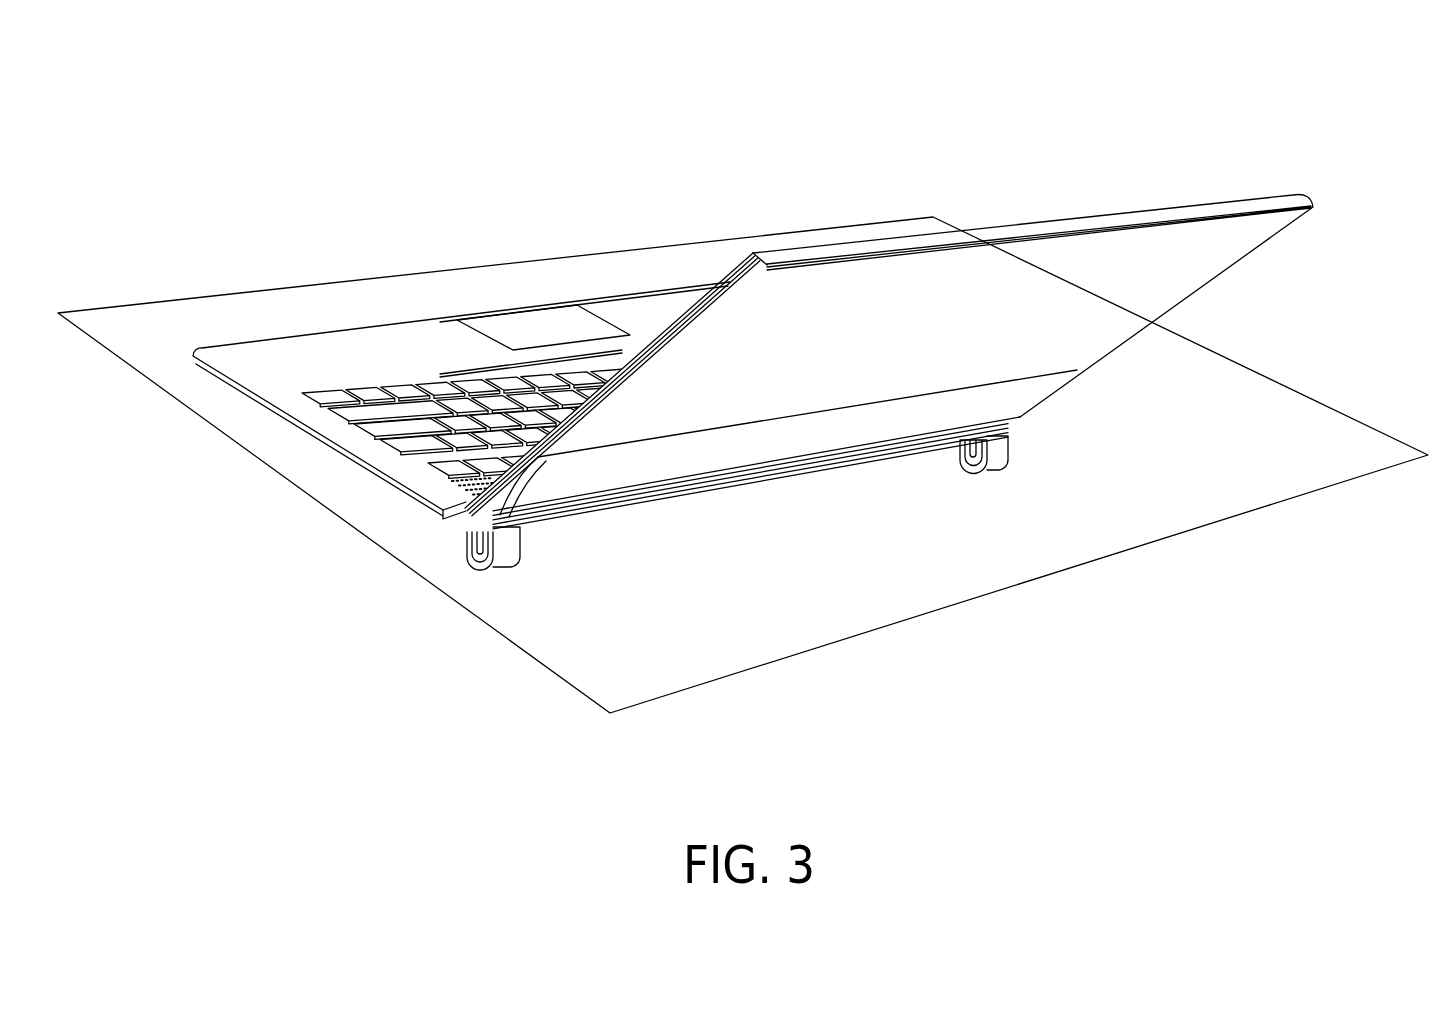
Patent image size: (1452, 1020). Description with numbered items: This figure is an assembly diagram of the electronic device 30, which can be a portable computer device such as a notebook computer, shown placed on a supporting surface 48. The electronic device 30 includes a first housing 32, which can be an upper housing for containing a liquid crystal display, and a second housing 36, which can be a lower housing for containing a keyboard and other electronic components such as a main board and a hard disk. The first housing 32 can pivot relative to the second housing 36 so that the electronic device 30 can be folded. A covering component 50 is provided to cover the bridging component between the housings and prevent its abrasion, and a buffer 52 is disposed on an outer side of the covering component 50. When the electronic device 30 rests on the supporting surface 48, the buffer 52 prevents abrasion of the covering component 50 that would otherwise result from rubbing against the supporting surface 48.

The electronic device 30 is at (818, 108).
The first housing 32 is at (1222, 233).
The second housing 36 is at (257, 360).
The supporting surface 48 is at (827, 625).
The covering component 50 is at (754, 513).
The buffer 52 is at (510, 555).